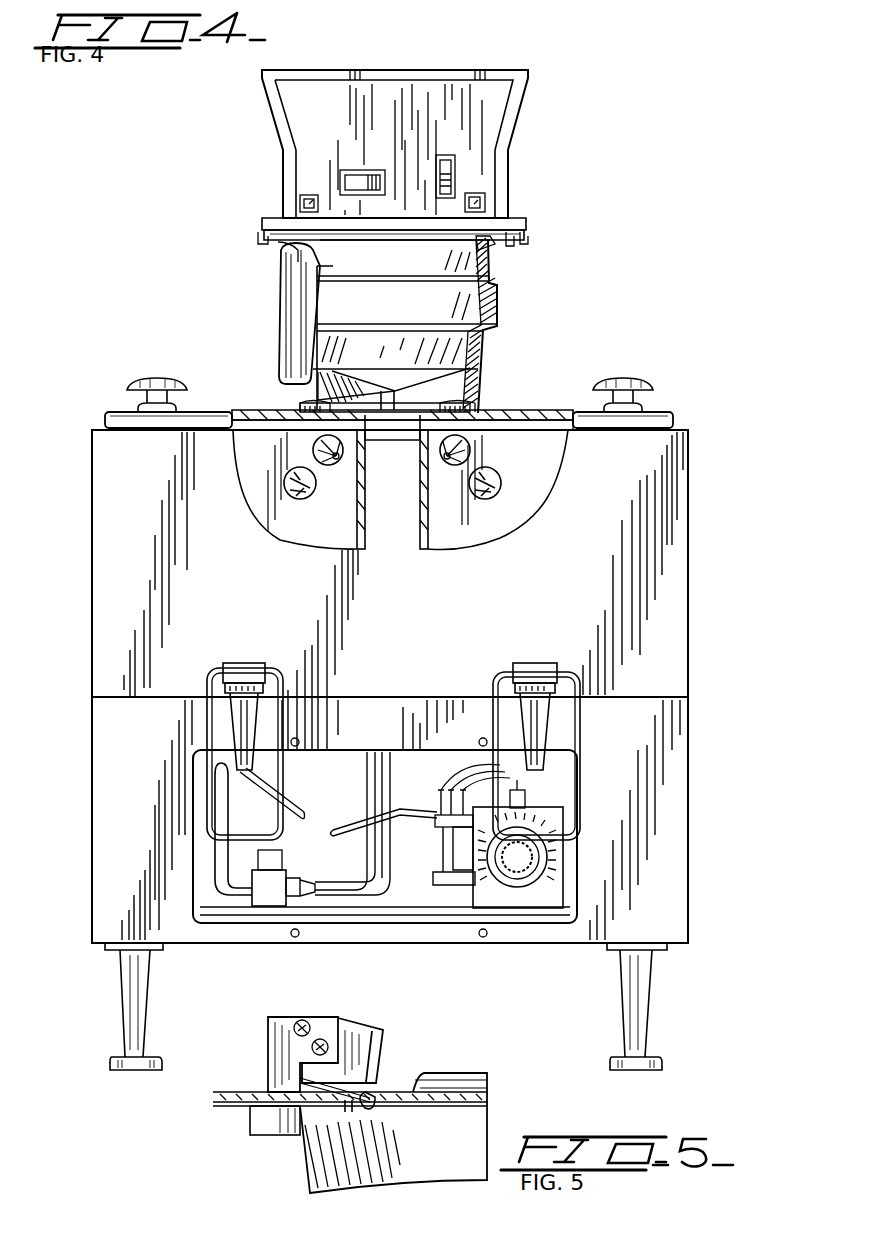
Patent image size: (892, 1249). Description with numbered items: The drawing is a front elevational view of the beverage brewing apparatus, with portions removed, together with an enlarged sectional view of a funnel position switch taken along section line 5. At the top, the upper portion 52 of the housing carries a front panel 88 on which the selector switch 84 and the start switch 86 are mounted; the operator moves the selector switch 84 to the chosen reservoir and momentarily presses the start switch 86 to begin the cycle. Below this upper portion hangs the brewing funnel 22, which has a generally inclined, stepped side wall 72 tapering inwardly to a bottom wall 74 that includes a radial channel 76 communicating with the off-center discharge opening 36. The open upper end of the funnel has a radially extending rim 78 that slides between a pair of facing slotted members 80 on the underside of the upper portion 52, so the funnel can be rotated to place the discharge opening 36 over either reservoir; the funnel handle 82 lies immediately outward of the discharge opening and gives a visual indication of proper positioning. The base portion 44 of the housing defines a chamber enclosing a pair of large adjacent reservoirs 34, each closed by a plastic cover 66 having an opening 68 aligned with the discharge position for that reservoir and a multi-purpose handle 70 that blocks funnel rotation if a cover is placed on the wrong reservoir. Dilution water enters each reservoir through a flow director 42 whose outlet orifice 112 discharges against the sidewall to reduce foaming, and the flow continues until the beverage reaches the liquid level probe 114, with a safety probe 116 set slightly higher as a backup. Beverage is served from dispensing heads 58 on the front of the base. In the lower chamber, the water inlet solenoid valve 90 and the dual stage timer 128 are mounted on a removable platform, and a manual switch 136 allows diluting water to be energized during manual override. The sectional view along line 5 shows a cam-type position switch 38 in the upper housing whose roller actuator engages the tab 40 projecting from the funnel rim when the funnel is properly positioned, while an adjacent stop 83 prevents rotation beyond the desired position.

In FIG. 4, the front panel 88 is at (410, 100).
In FIG. 4, the upper portion 52 is at (262, 105).
In FIG. 4, the brewing funnel 22 is at (530, 119).
In FIG. 5, the brewing funnel 22 is at (450, 1170).
In FIG. 4, the stepped side wall 72 is at (490, 258).
In FIG. 4, the selector switch 84 is at (362, 182).
In FIG. 4, the start switch 86 is at (448, 172).
In FIG. 4, the section line 5 is at (302, 183).
In FIG. 4, the slotted members 80 is at (262, 232).
In FIG. 4, the rim 78 is at (285, 248).
In FIG. 4, the funnel handle 82 is at (292, 312).
In FIG. 4, the bottom wall 74 is at (400, 372).
In FIG. 4, the radial channel 76 is at (388, 392).
In FIG. 4, the off-center discharge opening 36 is at (305, 405).
In FIG. 4, the cover opening 68 is at (302, 410).
In FIG. 4, the base portion 44 is at (92, 655).
In FIG. 4, the cover 66 is at (105, 415).
In FIG. 4, the handle 70 is at (157, 380).
In FIG. 4, the reservoirs 34 is at (328, 528).
In FIG. 4, the outlet orifice 112 is at (345, 456).
In FIG. 4, the flow director 42 is at (314, 448).
In FIG. 4, the safety probe 116 is at (290, 476).
In FIG. 4, the liquid level probe 114 is at (296, 495).
In FIG. 4, the beverage dispensing head 58 is at (243, 732).
In FIG. 4, the solenoid valve 90 is at (282, 886).
In FIG. 4, the dual stage timer 128 is at (535, 895).
In FIG. 4, the manual switch 136 is at (420, 915).
In FIG. 5, the tab 40 is at (272, 1115).
In FIG. 5, the position switch 38 is at (368, 1076).
In FIG. 5, the stop 83 is at (373, 1102).